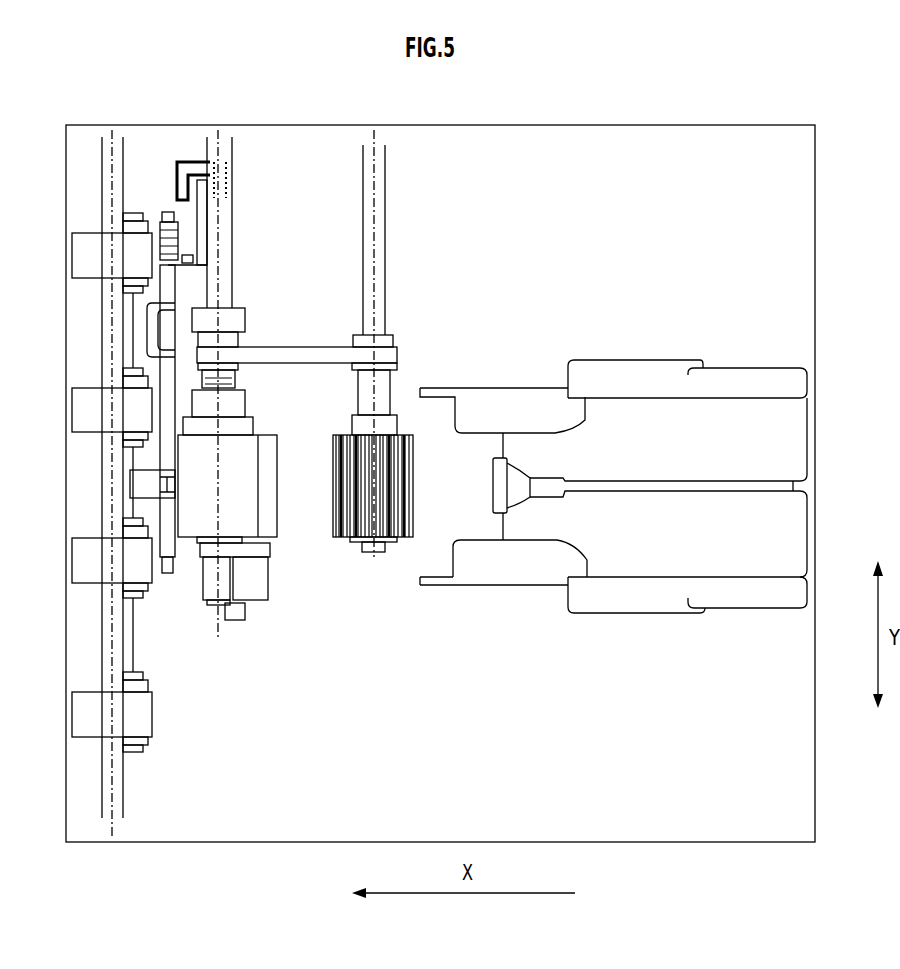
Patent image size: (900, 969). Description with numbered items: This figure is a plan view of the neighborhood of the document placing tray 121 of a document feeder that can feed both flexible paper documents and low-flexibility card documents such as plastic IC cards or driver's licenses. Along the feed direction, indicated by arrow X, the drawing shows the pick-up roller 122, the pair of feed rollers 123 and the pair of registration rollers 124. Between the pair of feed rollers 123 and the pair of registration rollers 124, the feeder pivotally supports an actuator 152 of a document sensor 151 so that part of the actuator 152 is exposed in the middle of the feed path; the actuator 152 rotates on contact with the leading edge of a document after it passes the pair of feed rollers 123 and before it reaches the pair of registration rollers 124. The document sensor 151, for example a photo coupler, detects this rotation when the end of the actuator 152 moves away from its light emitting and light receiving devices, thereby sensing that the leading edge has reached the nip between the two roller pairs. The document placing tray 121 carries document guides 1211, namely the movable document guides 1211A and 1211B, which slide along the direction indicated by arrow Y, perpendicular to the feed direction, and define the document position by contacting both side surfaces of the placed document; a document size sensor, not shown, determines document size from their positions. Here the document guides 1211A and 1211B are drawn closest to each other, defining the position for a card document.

The document placing tray 121 is at (816, 278).
The document guides 1211 is at (658, 143).
The document guide 1211A is at (605, 615).
The document guide 1211B is at (667, 368).
The pick-up roller 122 is at (337, 535).
The pair of feed rollers 123 is at (255, 450).
The pair of registration rollers 124 is at (85, 415).
The document sensor 151 is at (177, 162).
The actuator 152 is at (138, 485).